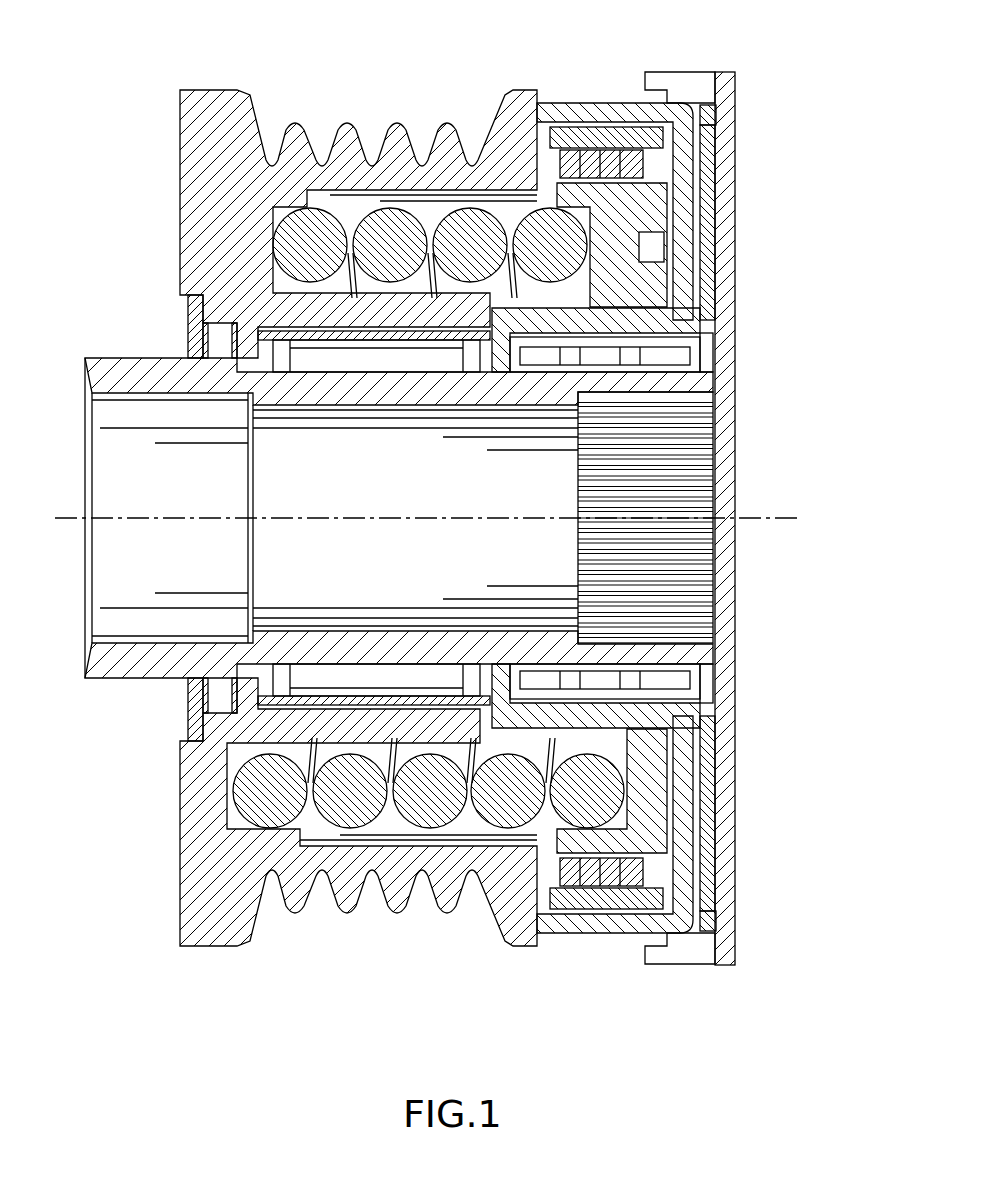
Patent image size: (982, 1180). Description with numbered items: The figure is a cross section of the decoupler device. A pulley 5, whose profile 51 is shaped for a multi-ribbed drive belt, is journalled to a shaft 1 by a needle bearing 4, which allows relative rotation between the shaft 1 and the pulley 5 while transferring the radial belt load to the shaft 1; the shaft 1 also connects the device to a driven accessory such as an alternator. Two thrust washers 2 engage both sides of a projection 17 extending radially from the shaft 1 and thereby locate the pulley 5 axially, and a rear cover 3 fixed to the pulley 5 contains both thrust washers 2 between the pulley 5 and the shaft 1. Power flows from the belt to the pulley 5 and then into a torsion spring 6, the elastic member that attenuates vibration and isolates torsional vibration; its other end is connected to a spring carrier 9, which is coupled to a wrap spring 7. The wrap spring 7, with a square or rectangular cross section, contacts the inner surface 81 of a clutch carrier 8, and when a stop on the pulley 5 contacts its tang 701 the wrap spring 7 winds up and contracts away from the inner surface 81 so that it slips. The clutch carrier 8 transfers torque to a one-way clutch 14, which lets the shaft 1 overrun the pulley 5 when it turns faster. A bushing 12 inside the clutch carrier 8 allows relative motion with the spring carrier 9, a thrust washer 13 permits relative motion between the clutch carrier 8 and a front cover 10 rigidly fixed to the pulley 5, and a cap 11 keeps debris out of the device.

The shaft 1 is at (86, 372).
The thrust washers 2 is at (234, 348).
The rear cover 3 is at (195, 310).
The needle bearing 4 is at (345, 365).
The pulley 5 is at (200, 162).
The torsion spring 6 is at (312, 235).
The wrap spring 7 is at (557, 162).
The clutch carrier 8 is at (573, 137).
The spring carrier 9 is at (610, 193).
The front cover 10 is at (712, 123).
The cap 11 is at (728, 75).
The bushing 12 is at (672, 240).
The thrust washer 13 is at (707, 262).
The one-way clutch 14 is at (670, 355).
The projection 17 is at (220, 700).
The profile 51 is at (343, 913).
The tang 701 is at (530, 873).
The inner surface 81 is at (600, 900).